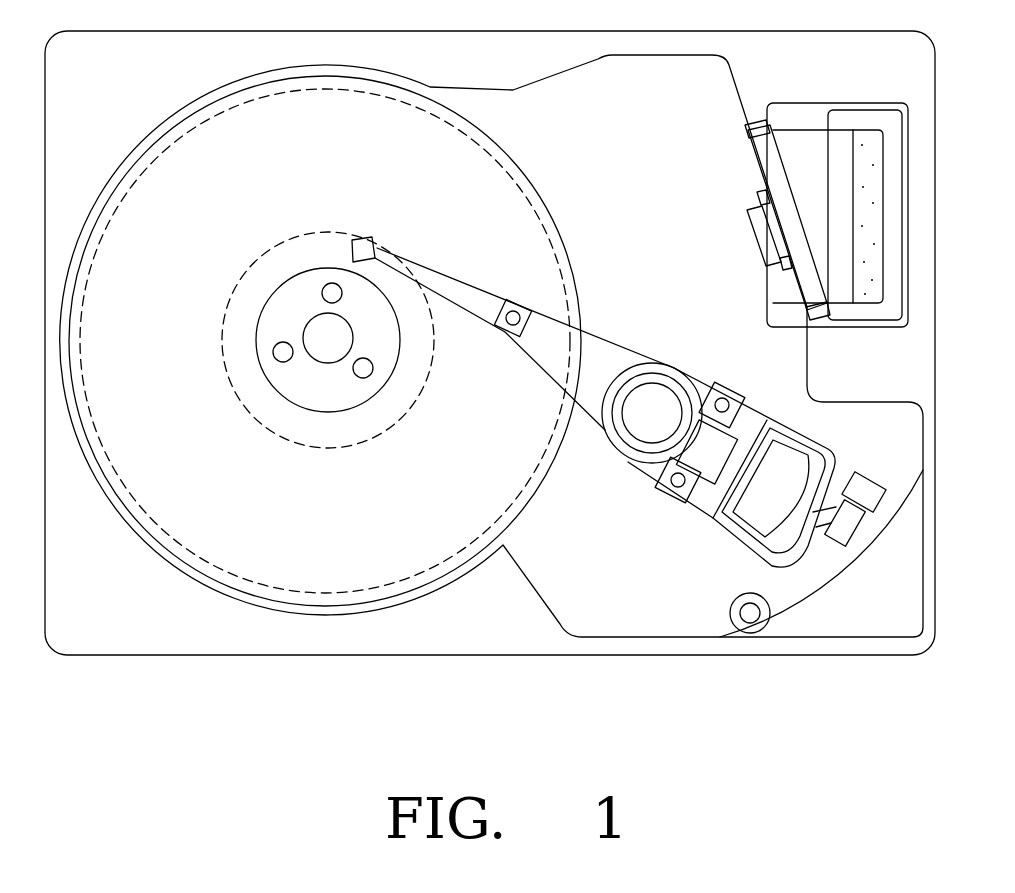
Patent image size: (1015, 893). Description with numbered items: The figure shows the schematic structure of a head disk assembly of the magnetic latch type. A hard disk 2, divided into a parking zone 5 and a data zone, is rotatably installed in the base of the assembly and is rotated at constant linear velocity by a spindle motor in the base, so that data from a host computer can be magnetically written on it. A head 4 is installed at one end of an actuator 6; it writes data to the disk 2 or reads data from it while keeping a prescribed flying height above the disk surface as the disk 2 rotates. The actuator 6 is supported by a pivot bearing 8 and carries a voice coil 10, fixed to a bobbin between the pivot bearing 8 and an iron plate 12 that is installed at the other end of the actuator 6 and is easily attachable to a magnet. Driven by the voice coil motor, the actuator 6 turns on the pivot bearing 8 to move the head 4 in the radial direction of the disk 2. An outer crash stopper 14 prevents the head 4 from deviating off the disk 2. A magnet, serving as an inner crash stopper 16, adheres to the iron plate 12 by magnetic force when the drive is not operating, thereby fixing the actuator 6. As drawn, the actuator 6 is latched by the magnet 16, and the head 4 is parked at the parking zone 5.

The hard disk 2 is at (283, 572).
The head 4 is at (365, 248).
The parking zone 5 is at (238, 388).
The actuator 6 is at (603, 324).
The pivot bearing 8 is at (655, 398).
The voice coil 10 is at (767, 420).
The iron plate 12 is at (852, 527).
The outer crash stopper 14 is at (750, 616).
The magnet (inner crash stopper) 16 is at (868, 483).